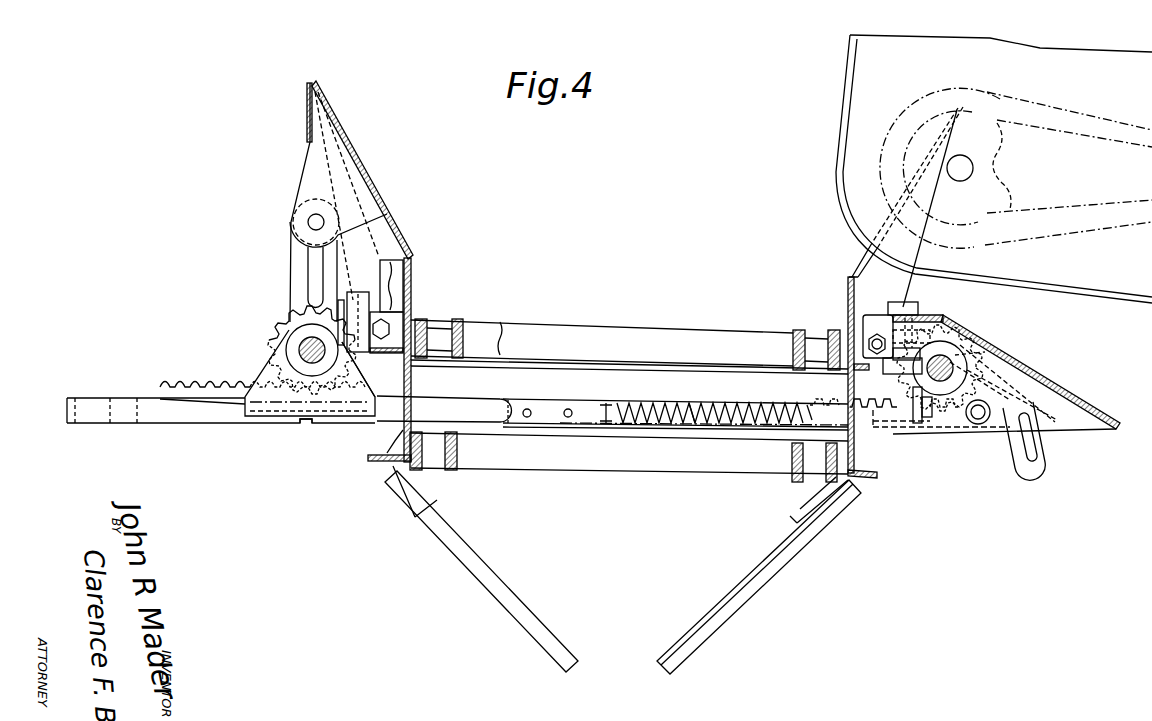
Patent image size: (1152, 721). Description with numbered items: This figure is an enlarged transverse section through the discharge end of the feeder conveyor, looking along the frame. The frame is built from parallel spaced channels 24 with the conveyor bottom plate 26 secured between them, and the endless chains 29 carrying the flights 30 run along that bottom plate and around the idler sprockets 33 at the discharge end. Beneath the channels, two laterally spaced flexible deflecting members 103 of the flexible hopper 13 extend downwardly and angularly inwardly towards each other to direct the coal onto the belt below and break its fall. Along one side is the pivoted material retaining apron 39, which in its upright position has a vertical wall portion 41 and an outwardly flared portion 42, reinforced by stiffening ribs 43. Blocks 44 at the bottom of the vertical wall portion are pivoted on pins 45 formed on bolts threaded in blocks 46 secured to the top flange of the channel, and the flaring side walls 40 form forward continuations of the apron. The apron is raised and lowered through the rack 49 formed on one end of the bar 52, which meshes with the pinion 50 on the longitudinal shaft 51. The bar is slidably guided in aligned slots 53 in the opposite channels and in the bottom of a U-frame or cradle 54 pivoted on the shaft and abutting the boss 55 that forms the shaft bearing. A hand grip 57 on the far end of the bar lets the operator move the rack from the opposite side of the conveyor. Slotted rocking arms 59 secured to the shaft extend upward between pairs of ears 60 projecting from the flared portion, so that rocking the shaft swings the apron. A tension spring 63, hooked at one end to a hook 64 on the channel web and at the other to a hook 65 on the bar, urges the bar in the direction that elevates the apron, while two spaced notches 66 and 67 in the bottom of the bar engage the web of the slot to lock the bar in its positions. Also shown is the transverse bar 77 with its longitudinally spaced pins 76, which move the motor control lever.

The flexible hopper 13 is at (464, 568).
The channel 24 is at (408, 368).
The conveyor bottom plate 26 is at (583, 367).
The endless chain 29 is at (468, 320).
The flight 30 is at (697, 323).
The idler sprocket 33 is at (403, 378).
The material retaining apron 39 is at (416, 279).
The side wall 40 is at (850, 294).
The vertical wall portion 41 is at (397, 262).
The outwardly flared portion 42 is at (380, 188).
The stiffening rib 43 is at (373, 280).
The block 44 is at (950, 337).
The pin 45 is at (433, 332).
The block 46 is at (375, 262).
The rack 49 is at (187, 380).
The pinion 50 is at (287, 327).
The longitudinal shaft 51 is at (307, 360).
The bar 52 is at (453, 397).
The slot 53 is at (387, 453).
The U-frame or cradle 54 is at (267, 410).
The boss 55 is at (972, 373).
The hand grip 57 is at (80, 424).
The slotted rocking arm 59 is at (290, 254).
The ear 60 is at (306, 186).
The tension spring 63 is at (693, 417).
The hook 64 is at (823, 413).
The hook 65 is at (610, 405).
The notch 66 is at (308, 423).
The notch 67 is at (375, 416).
The pin 76 is at (568, 418).
The transverse bar 77 is at (552, 412).
The flexible deflecting member 103 is at (542, 620).